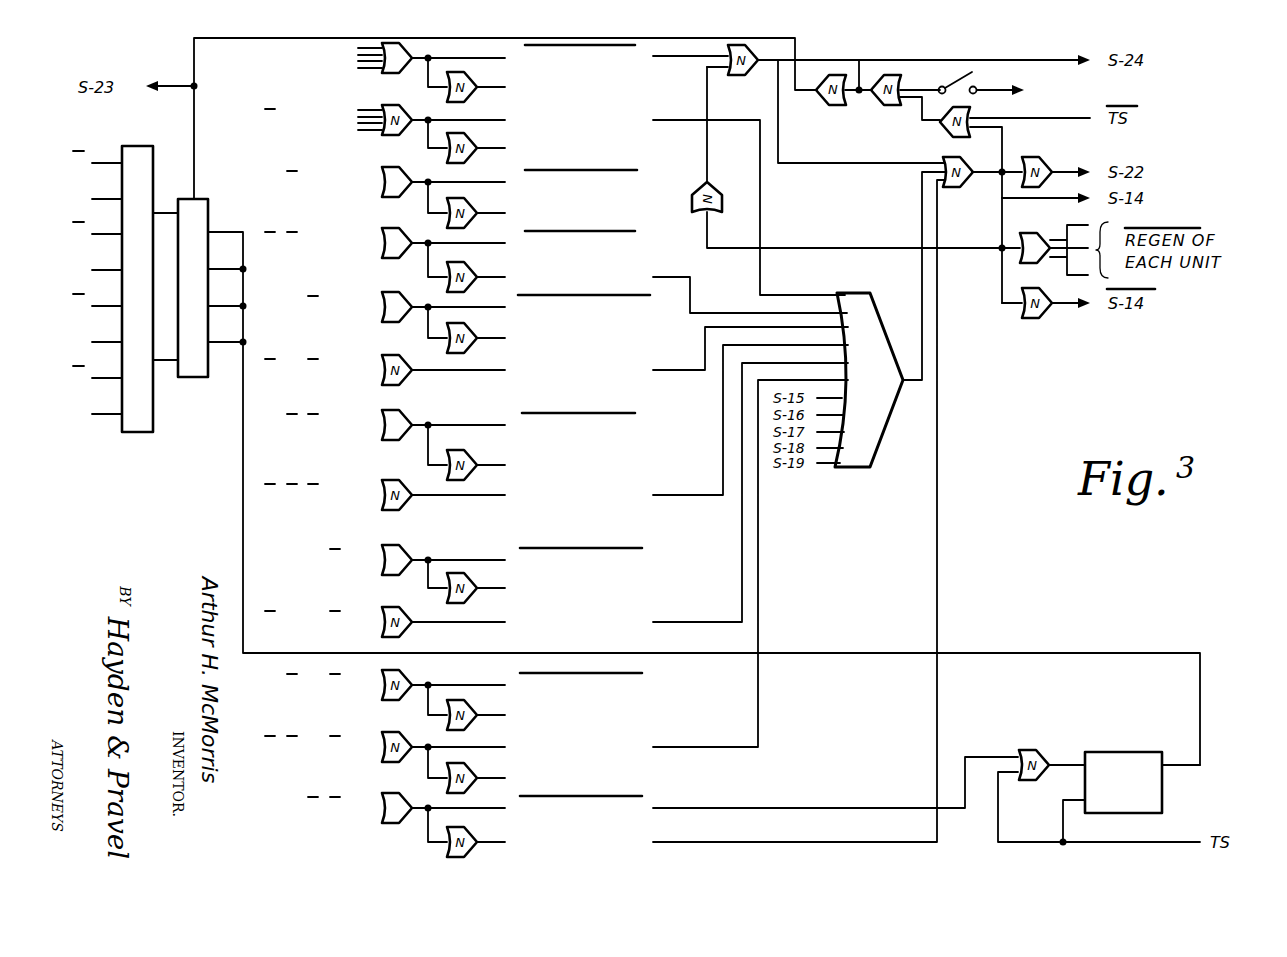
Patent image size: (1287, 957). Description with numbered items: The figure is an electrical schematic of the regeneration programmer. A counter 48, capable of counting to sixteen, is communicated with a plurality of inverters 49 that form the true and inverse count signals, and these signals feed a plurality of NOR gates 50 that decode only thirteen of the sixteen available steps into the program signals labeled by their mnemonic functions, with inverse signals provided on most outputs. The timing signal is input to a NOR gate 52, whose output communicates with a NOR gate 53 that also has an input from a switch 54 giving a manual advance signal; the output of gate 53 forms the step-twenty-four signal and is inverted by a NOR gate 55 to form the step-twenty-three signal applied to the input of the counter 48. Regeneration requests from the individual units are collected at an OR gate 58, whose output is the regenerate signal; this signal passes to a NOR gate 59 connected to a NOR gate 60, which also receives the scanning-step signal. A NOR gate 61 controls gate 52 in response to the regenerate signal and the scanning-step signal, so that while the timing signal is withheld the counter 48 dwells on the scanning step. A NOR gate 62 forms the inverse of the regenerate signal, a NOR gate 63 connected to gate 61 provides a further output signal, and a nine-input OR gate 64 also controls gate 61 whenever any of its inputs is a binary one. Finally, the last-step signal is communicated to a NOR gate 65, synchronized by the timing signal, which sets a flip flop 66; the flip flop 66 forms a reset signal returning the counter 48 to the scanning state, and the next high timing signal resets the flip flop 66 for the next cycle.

The counter 48 is at (194, 374).
The inverters 49 is at (140, 430).
The NOR gates 50 is at (240, 97).
The NOR gate 52 is at (946, 132).
The NOR gate 53 is at (890, 106).
The switch 54 is at (962, 88).
The NOR gate 55 is at (834, 105).
The OR gate 58 is at (1024, 234).
The NOR gate 59 is at (722, 203).
The NOR gate 60 is at (742, 75).
The NOR gate 61 is at (954, 188).
The NOR gate 62 is at (1036, 318).
The NOR gate 63 is at (1036, 158).
The OR gate 64 is at (883, 428).
The NOR gate 65 is at (1030, 750).
The flip flop 66 is at (1132, 750).